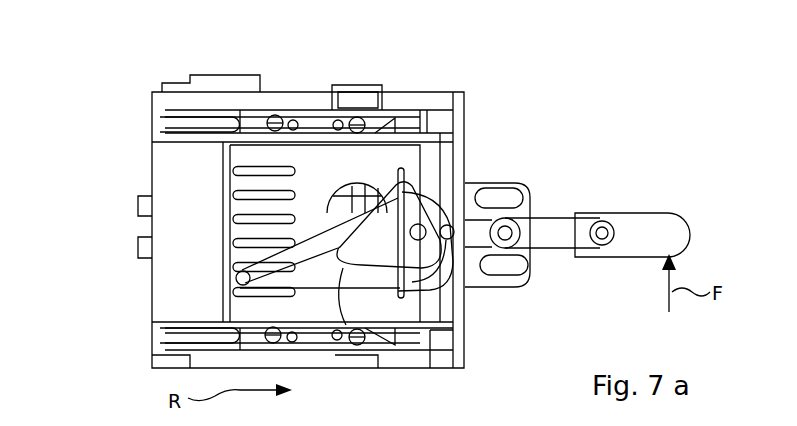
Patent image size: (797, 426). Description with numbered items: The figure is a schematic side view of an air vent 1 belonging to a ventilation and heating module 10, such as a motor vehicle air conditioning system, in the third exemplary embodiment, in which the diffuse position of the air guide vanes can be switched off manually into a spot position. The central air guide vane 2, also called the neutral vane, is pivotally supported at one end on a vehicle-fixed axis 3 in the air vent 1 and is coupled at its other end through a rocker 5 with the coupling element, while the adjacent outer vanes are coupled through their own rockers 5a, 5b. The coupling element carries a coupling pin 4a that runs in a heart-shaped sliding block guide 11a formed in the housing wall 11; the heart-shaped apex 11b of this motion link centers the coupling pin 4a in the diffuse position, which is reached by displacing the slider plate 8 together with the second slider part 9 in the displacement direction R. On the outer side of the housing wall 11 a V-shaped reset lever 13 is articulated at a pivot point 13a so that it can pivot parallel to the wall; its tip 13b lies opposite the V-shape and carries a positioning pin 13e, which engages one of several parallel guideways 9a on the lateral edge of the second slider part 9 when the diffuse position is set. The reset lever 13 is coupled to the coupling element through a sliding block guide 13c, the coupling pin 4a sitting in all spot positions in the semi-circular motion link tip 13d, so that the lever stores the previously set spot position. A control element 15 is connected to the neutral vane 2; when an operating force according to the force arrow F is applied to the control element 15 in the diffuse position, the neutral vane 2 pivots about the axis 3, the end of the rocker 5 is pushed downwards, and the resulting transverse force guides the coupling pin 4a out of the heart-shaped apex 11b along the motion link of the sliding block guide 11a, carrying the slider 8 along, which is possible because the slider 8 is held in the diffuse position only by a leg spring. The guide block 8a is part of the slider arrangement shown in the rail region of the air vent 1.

The ventilation and heating module 10 is at (138, 70).
The air vent 1 is at (300, 88).
The housing wall 11 is at (198, 170).
The sliding block guide 11a is at (335, 212).
The heart-shaped apex 11b is at (395, 258).
The slider plate 8 is at (322, 128).
The guide block 8a is at (386, 122).
The second slider part 9 is at (331, 176).
The guideways 9a is at (240, 257).
The coupling pin 4a is at (438, 185).
The reset lever 13 is at (326, 269).
The pivot point 13a is at (460, 280).
The tip 13b is at (236, 278).
The sliding block guide 13c is at (346, 300).
The motion link tip 13d is at (412, 200).
The positioning pin 13e is at (240, 292).
The rocker 5 is at (483, 230).
The rocker 5a is at (518, 272).
The rocker 5b is at (498, 188).
The central air guide vane 2 is at (552, 240).
The vehicle-fixed axis 3 is at (602, 220).
The control element 15 is at (646, 230).